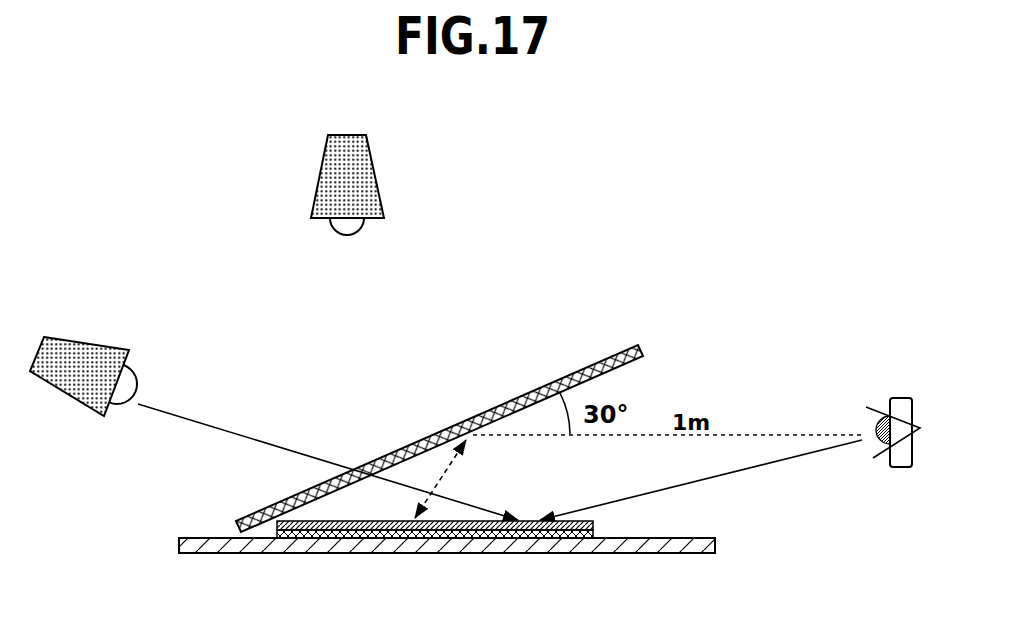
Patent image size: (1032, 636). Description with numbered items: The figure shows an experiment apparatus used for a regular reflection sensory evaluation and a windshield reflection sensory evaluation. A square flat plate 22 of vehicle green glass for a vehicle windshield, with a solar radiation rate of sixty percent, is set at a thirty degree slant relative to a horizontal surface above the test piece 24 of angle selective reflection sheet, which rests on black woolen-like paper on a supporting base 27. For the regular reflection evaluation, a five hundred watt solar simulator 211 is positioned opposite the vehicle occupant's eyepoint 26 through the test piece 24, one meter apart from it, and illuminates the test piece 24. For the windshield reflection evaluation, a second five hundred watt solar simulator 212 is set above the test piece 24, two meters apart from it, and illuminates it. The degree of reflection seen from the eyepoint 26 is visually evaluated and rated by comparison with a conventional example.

The solar simulator 211 is at (98, 345).
The solar simulator 212 is at (379, 171).
The flat plate 22 is at (503, 400).
The test piece 24 is at (546, 536).
The vehicle occupant's eyepoint 26 is at (873, 407).
The base plate 27 is at (692, 538).